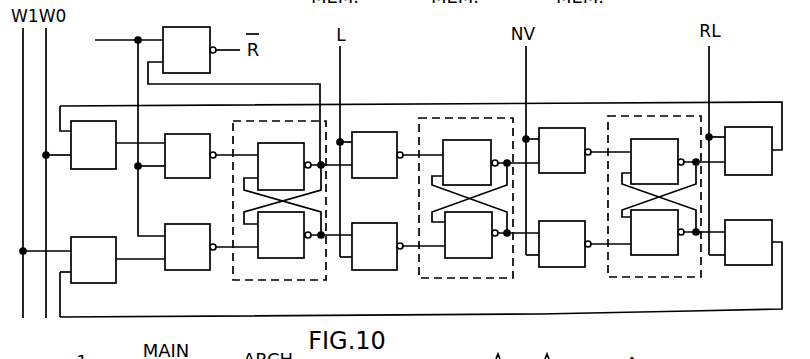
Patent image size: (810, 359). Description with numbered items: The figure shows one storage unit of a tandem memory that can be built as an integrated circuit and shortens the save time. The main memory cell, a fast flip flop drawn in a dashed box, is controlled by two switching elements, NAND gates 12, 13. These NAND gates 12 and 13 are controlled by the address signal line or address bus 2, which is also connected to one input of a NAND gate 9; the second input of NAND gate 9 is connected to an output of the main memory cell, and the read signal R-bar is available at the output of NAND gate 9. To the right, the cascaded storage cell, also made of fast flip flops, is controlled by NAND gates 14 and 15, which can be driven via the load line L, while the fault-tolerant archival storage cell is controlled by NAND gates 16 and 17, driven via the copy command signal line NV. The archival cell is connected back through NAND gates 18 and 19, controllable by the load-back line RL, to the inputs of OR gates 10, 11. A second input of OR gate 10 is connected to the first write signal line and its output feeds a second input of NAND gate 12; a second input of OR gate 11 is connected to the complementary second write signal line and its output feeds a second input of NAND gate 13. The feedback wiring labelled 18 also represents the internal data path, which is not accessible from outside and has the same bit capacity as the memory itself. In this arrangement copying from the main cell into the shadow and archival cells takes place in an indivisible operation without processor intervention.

The address signal line 2 is at (102, 39).
The NAND gate 9 is at (201, 29).
The OR gate 10 is at (95, 161).
The OR gate 11 is at (80, 244).
The NAND gate 12 is at (193, 170).
The NAND gate 13 is at (180, 224).
The NAND gate 14 is at (385, 172).
The NAND gate 15 is at (362, 224).
The NAND gate 16 is at (570, 172).
The NAND gate 17 is at (548, 223).
The NAND gate 18 is at (414, 102).
The NAND gate 19 is at (733, 223).